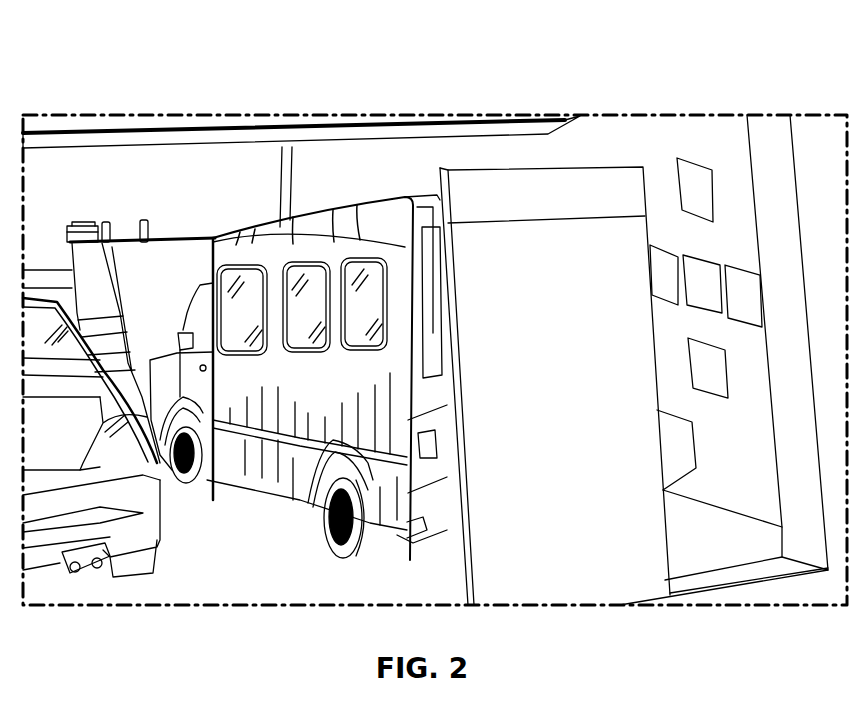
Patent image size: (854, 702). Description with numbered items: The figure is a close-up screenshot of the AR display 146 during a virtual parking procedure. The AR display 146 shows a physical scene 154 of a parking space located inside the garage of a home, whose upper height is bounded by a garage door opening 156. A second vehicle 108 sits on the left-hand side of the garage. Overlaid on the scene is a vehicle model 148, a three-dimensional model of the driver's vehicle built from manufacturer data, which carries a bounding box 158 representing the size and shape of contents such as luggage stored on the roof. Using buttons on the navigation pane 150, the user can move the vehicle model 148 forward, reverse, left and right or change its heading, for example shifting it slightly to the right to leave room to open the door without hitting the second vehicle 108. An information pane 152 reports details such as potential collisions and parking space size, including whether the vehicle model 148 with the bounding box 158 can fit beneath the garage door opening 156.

The AR display 146 is at (731, 49).
The navigation pane 150 is at (780, 180).
The information pane 152 is at (647, 516).
The physical scene 154 is at (80, 230).
The garage door opening 156 is at (302, 127).
The bounding box 158 is at (358, 232).
The vehicle model 148 is at (298, 365).
The second vehicle 108 is at (128, 367).